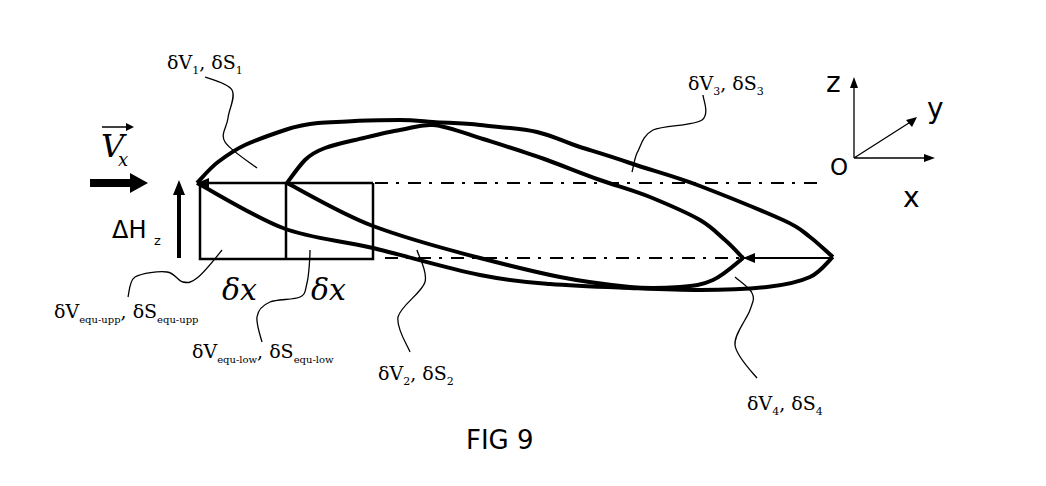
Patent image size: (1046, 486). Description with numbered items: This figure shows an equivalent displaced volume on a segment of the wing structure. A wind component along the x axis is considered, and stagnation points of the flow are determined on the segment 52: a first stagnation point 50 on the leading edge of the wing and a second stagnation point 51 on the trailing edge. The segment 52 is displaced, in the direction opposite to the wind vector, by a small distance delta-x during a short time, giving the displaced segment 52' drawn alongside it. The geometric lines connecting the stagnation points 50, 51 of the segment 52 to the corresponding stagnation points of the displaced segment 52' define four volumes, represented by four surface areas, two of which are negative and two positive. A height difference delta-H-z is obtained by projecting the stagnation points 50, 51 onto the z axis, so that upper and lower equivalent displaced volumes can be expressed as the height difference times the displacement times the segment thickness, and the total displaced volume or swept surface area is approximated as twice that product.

The first stagnation point 50 is at (195, 182).
The second stagnation point 51 is at (840, 268).
The segment 52 is at (515, 159).
The displaced segment 52' is at (504, 164).